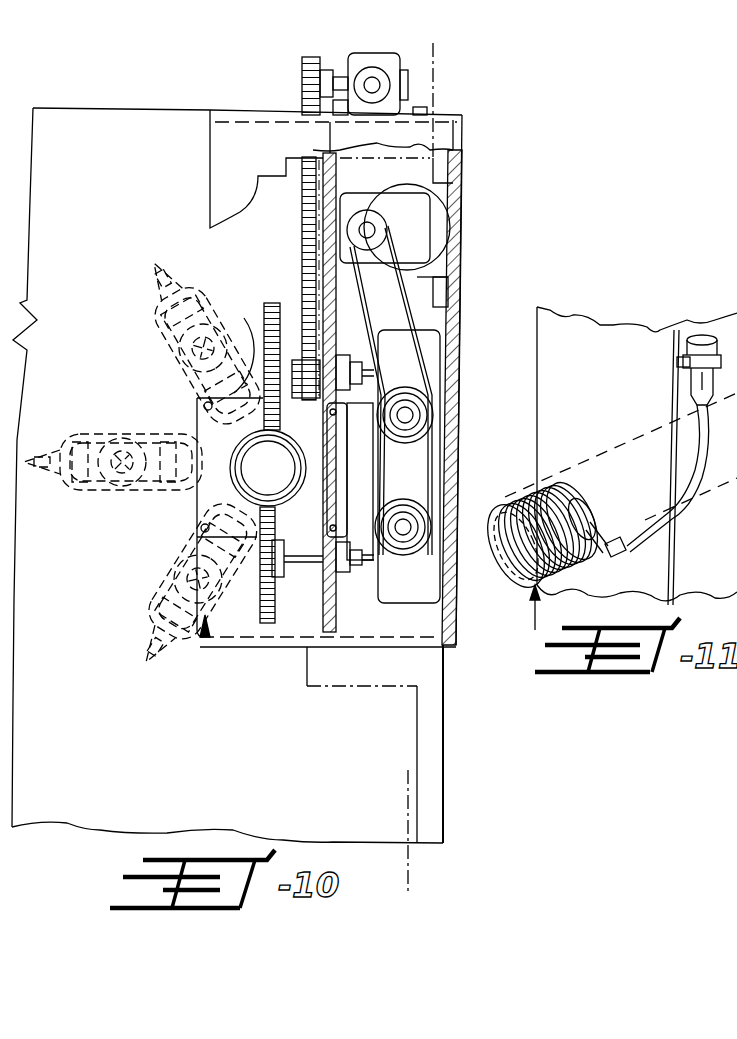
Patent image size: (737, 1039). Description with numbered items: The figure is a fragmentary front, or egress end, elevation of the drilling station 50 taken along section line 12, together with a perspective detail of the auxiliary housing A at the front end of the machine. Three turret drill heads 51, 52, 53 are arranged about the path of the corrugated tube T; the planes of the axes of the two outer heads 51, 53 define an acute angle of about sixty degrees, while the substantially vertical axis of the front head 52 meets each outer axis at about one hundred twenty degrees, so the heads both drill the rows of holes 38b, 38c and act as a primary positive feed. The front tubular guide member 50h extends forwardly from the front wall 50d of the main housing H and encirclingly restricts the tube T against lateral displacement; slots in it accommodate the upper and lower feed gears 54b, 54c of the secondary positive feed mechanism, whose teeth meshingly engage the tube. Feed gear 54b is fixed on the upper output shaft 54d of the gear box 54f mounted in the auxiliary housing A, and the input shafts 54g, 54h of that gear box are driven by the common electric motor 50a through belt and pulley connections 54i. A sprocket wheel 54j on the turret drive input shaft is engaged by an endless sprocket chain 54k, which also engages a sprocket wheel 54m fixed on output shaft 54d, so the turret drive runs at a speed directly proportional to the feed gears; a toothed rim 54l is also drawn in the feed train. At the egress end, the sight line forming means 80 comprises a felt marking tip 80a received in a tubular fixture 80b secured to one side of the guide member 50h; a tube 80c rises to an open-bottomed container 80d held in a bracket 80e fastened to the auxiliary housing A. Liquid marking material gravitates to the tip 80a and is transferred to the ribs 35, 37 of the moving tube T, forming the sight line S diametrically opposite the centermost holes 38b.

In FIG. 10, the drilling station 50 is at (450, 788).
In FIG. 11, the drilling station 50 is at (604, 320).
In FIG. 10, the electric motor 50a is at (452, 235).
In FIG. 10, the front wall 50d is at (110, 590).
In FIG. 10, the front tubular guide member 50h is at (197, 513).
In FIG. 11, the front tubular guide member 50h is at (575, 483).
In FIG. 10, the turret drill head 51 is at (150, 314).
In FIG. 10, the turret drill head 52 is at (140, 430).
In FIG. 10, the turret drill head 53 is at (208, 637).
In FIG. 10, the feed gear 54b is at (284, 266).
In FIG. 10, the feed gear 54c is at (197, 557).
In FIG. 10, the output shaft 54d is at (362, 364).
In FIG. 10, the gear box 54f is at (407, 472).
In FIG. 10, the input shaft 54g is at (407, 416).
In FIG. 10, the input shaft 54h is at (403, 530).
In FIG. 10, the belt and pulley connections 54i is at (448, 283).
In FIG. 10, the sprocket wheel 54j is at (302, 82).
In FIG. 10, the sprocket chain 54k is at (300, 240).
In FIG. 10, the ring gear rim 54l is at (300, 575).
In FIG. 10, the sprocket wheel 54m is at (230, 331).
In FIG. 11, the rib 35 is at (580, 495).
In FIG. 11, the rib 37 is at (510, 515).
In FIG. 11, the drainage holes 38b is at (505, 545).
In FIG. 11, the drainage holes 38c is at (512, 585).
In FIG. 11, the sight line forming means 80 is at (684, 525).
In FIG. 11, the marking tip 80a is at (578, 485).
In FIG. 11, the tubular fixture 80b is at (645, 597).
In FIG. 11, the tube 80c is at (690, 462).
In FIG. 11, the container 80d is at (688, 388).
In FIG. 11, the bracket 80e is at (673, 363).
In FIG. 10, the section line 12- 12 is at (436, 55).
In FIG. 10, the auxiliary housing A is at (382, 647).
In FIG. 11, the auxiliary housing A is at (535, 335).
In FIG. 10, the tube T is at (310, 462).
In FIG. 11, the tube T is at (533, 610).
In FIG. 10, the main housing H is at (444, 732).
In FIG. 11, the sight line S is at (537, 592).